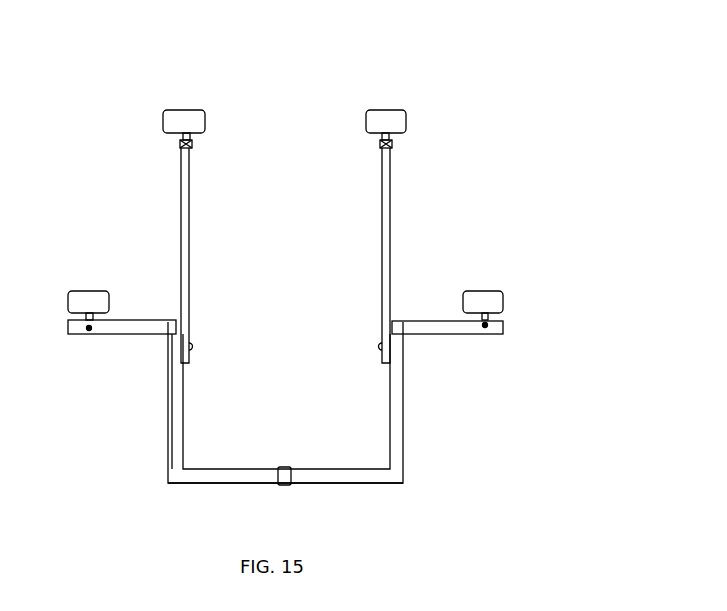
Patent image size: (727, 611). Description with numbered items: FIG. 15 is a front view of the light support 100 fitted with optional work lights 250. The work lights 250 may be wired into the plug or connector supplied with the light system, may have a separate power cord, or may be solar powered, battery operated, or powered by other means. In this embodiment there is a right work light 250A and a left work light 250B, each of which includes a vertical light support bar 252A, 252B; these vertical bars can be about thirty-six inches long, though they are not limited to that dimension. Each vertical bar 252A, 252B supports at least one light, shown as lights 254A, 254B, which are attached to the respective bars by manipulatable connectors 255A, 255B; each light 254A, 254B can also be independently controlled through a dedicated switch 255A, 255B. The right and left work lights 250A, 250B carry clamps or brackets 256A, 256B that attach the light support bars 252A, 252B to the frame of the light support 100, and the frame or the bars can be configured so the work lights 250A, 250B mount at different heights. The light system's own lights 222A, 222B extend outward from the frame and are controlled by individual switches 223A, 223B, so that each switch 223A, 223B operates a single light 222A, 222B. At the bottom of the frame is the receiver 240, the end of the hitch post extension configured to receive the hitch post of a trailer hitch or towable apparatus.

The light support 100 is at (470, 409).
The receiver 240 is at (296, 486).
The work light 250 is at (315, 83).
The right work light 250A is at (467, 238).
The left work light 250B is at (146, 233).
The light support bar 252A is at (392, 240).
The light support bar 252B is at (226, 255).
The light 254A is at (392, 110).
The light 254B is at (172, 110).
The manipulatable connector 255A is at (393, 143).
The manipulatable connector 255B is at (178, 146).
The clamp or bracket 256A is at (367, 354).
The clamp or bracket 256B is at (207, 350).
The light 222A is at (487, 300).
The light 222B is at (95, 303).
The switch 223A is at (488, 325).
The switch 223B is at (88, 333).